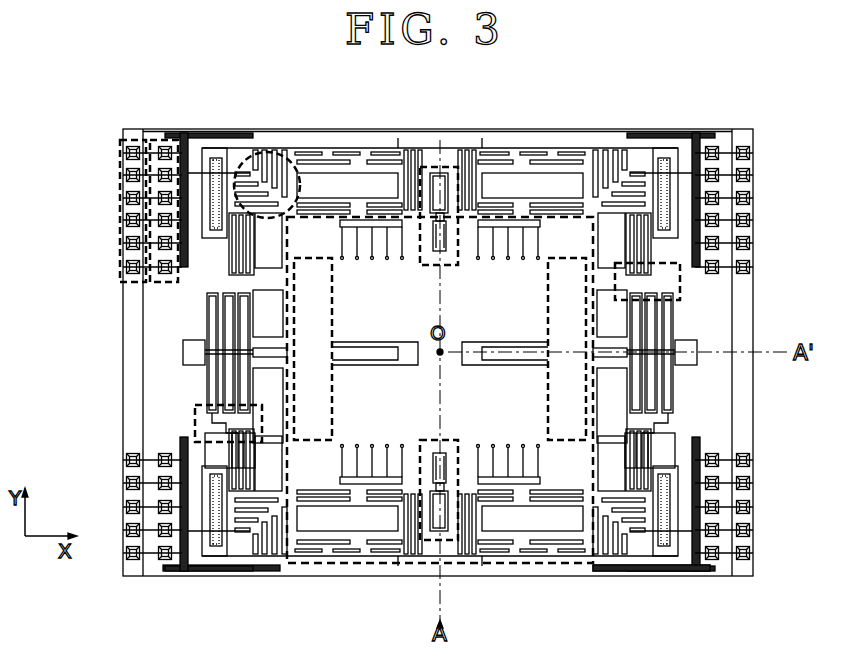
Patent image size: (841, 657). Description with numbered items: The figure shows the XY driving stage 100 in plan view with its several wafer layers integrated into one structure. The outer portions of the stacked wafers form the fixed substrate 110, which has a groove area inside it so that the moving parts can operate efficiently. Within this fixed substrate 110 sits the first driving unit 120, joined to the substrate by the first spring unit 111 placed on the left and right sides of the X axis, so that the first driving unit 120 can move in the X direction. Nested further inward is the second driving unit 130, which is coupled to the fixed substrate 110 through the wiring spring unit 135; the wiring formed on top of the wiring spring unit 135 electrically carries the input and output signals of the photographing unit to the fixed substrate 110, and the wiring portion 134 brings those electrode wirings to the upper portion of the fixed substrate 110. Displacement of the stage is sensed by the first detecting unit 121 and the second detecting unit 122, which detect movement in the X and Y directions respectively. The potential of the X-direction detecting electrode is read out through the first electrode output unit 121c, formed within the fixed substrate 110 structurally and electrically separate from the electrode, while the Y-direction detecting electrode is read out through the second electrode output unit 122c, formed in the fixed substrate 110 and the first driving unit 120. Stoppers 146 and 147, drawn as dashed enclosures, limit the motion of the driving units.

The XY driving stage 100 is at (720, 76).
The fixed substrate 110 is at (735, 131).
The first spring unit 111 is at (700, 460).
The first driving unit 120 is at (266, 483).
The first detecting unit 121 is at (599, 573).
The first electrode output unit 121c is at (715, 567).
The second detecting unit 122 is at (330, 245).
The second electrode output unit 122c is at (697, 348).
The second driving unit 130 is at (516, 200).
The wiring portion 134 is at (120, 215).
The wiring spring unit 135 is at (262, 153).
The stopper 146 is at (441, 165).
The stopper 147 is at (682, 264).